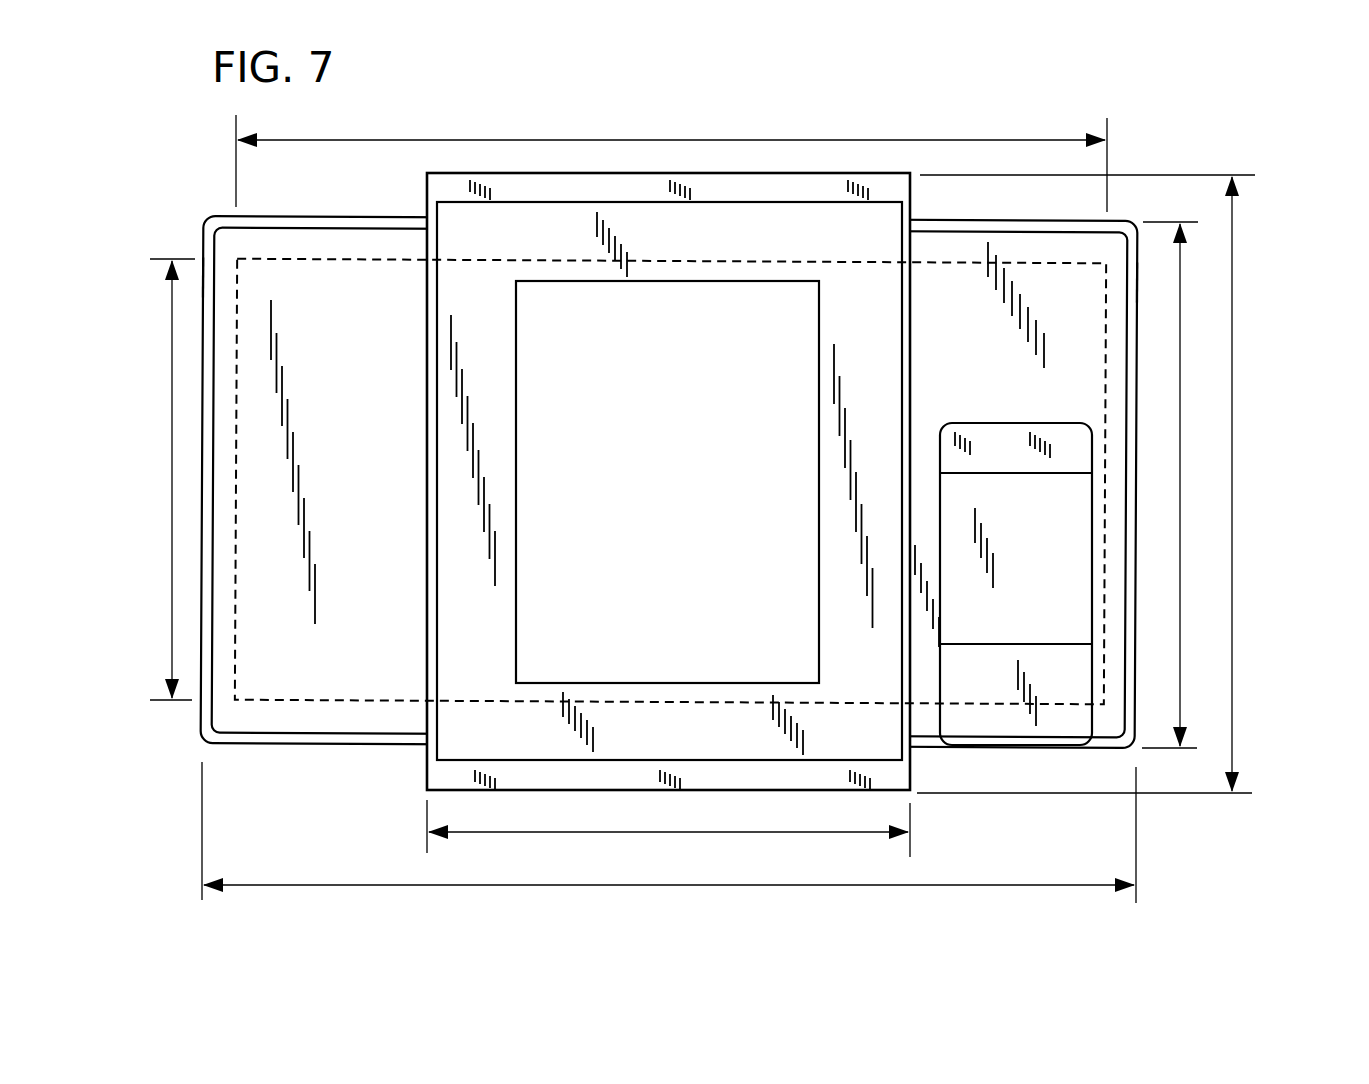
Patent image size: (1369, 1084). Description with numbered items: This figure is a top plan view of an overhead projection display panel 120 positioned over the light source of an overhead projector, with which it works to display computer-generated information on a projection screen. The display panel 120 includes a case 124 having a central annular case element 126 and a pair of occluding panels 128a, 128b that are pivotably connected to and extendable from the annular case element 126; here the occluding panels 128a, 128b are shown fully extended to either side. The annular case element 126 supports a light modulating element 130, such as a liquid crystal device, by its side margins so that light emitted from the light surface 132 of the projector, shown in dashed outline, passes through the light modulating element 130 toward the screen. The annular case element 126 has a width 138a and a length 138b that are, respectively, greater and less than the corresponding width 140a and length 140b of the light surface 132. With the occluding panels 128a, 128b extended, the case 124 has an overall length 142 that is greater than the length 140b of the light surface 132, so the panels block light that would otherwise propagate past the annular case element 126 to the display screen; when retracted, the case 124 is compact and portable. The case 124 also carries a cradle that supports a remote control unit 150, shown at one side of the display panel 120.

The overhead projection display panel 120 is at (956, 120).
The case 124 is at (665, 168).
The annular case element 126 is at (450, 212).
The occluding panel 128a is at (1117, 242).
The occluding panel 128b is at (224, 234).
The light modulating element 130 is at (691, 457).
The light surface 132 is at (940, 262).
The width 138a is at (1232, 420).
The length 138b is at (677, 833).
The width 140a is at (170, 516).
The length 140b is at (582, 140).
The length 142 is at (970, 885).
The remote control unit 150 is at (1028, 443).